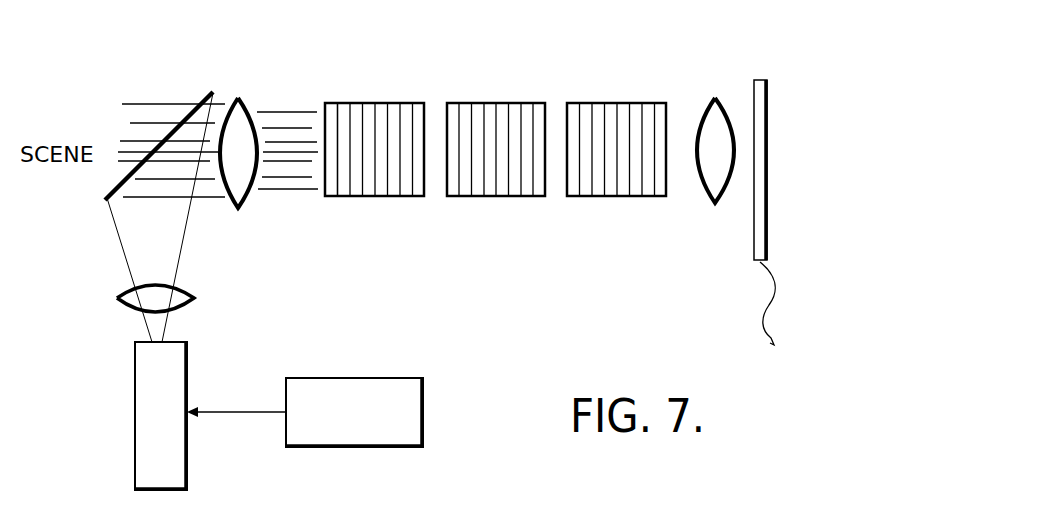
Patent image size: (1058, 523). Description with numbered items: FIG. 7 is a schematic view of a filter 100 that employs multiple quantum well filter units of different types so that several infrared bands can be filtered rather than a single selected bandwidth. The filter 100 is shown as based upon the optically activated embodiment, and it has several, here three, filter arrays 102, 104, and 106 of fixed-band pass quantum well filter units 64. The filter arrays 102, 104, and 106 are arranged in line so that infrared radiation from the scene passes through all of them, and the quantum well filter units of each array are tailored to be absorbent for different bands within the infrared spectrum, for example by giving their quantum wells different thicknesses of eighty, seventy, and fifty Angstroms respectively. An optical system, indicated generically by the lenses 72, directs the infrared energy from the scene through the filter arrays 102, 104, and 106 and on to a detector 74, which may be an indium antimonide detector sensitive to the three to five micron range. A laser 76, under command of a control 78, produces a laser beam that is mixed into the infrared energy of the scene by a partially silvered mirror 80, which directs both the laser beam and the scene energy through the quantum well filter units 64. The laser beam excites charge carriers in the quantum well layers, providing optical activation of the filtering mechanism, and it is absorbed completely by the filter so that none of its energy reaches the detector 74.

The filter 100 is at (222, 53).
The partially silvered mirror 80 is at (212, 93).
The lenses 72 is at (240, 207).
The quantum well filter unit 64 is at (343, 110).
The filter array 102 is at (419, 211).
The filter array 104 is at (540, 211).
The filter array 106 is at (661, 211).
The detector 74 is at (757, 80).
The laser 76 is at (187, 490).
The control 78 is at (423, 447).